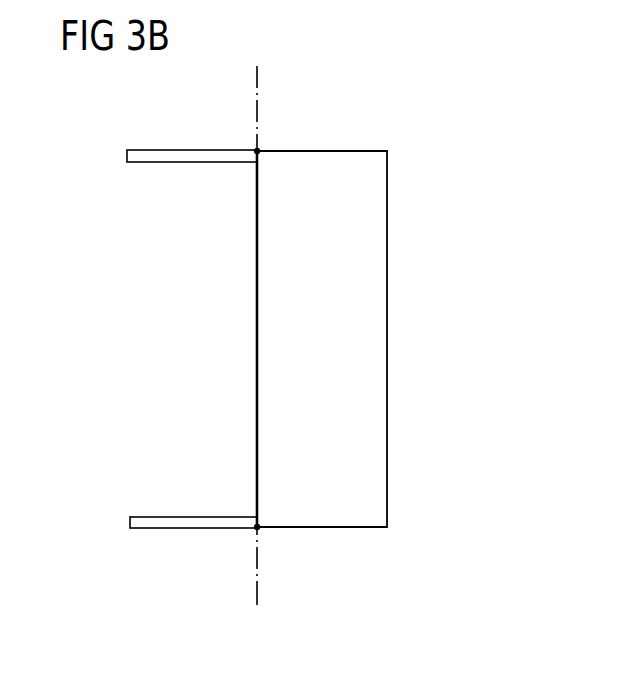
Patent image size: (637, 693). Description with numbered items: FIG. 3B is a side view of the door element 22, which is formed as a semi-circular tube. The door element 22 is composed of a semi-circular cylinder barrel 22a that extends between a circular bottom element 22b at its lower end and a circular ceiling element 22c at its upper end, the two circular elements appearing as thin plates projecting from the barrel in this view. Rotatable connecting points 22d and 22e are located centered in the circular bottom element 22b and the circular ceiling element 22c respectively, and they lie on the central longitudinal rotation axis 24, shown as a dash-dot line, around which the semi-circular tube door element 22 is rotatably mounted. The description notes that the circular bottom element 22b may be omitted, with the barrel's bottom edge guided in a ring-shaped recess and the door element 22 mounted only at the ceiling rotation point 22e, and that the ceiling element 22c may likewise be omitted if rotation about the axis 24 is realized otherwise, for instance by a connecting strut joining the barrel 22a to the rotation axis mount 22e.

The door element 22 is at (303, 333).
The semi-circular cylinder barrel 22a is at (370, 313).
The circular bottom element 22b is at (170, 530).
The circular ceiling element 22c is at (158, 148).
The rotatable connecting point 22d is at (261, 530).
The rotatable connecting point 22e is at (260, 148).
The central longitudinal rotation axis 24 is at (257, 80).